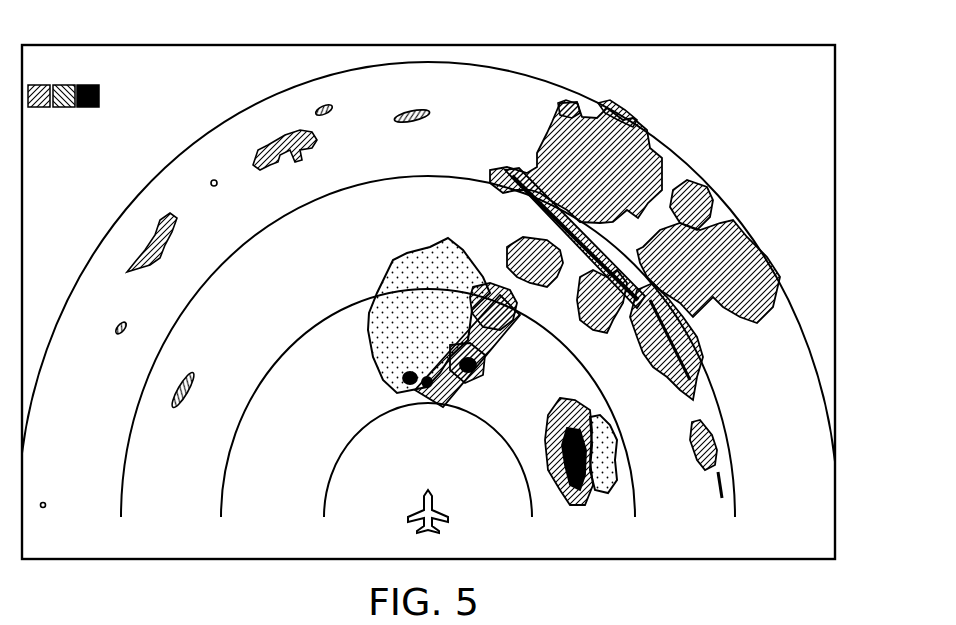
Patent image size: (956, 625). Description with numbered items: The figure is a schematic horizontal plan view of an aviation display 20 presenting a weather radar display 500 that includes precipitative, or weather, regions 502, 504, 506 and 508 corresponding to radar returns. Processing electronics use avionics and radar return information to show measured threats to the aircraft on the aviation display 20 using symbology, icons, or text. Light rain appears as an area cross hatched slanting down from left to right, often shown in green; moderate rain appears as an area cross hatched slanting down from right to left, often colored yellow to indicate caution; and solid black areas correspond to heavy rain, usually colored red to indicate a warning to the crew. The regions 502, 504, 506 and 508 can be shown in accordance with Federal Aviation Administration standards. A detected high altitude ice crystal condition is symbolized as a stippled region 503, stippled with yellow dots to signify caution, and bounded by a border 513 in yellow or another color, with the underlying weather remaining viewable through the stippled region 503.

The weather radar display 500 is at (655, 33).
The aviation display 20 is at (62, 561).
The precipitative region 502 is at (692, 338).
The stippled region 503 is at (372, 358).
The precipitative region 504 is at (716, 450).
The precipitative region 506 is at (483, 380).
The precipitative region 508 is at (566, 478).
The border 513 is at (380, 292).